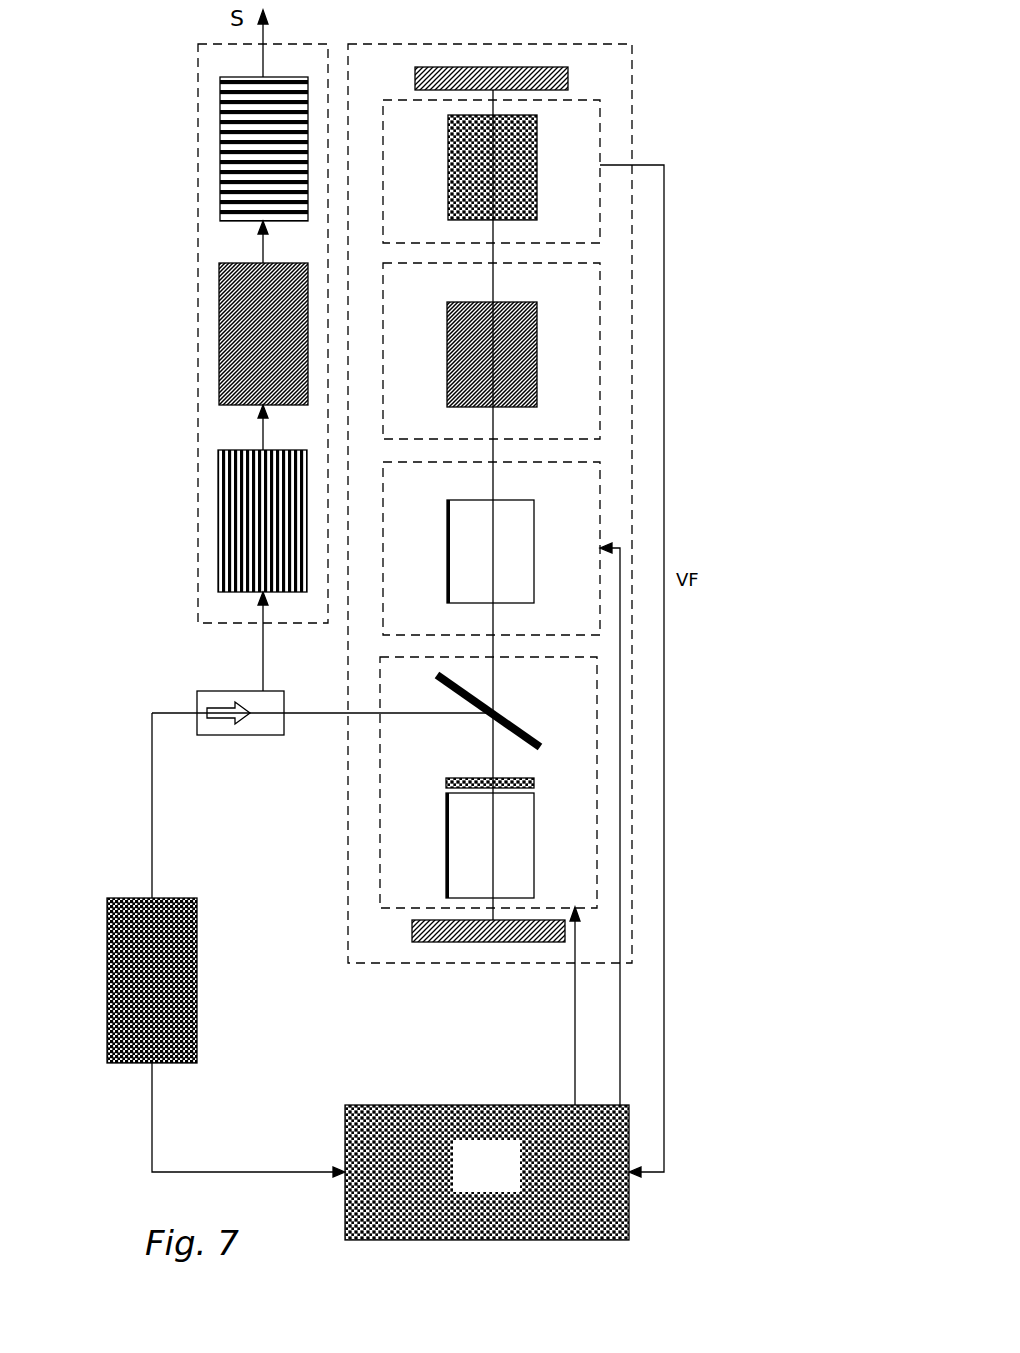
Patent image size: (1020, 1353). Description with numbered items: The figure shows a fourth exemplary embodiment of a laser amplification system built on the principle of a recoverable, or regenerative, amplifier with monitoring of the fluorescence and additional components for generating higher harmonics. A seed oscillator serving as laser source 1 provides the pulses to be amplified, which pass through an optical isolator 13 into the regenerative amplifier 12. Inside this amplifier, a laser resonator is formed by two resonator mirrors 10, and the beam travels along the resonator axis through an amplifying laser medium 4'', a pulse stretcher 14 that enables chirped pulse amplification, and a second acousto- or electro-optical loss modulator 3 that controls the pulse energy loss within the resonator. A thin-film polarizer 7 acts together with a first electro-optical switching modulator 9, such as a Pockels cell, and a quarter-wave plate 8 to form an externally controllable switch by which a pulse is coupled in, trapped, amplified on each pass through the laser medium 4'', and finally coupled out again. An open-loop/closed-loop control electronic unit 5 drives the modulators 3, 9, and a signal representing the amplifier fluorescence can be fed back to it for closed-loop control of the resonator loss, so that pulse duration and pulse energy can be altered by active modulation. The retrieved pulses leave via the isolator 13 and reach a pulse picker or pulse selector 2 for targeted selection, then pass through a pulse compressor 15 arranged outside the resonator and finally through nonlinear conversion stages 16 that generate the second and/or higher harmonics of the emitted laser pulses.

The laser source 1 is at (200, 980).
The pulse picker or pulse selector 2 is at (202, 521).
The acousto- or electro-optical loss modulator 3 is at (556, 548).
The amplifying laser medium 4'' is at (562, 166).
The open-loop/closed-loop control electronic unit 5 is at (487, 1172).
The polarizer 7 is at (583, 708).
The quarter-wave plate 8 is at (393, 808).
The electro-optical switching modulator 9 is at (395, 845).
The resonator mirror 10 is at (578, 493).
The regenerative amplifier 12 is at (545, 503).
The optical isolator 13 is at (261, 733).
The pulse stretcher 14 is at (563, 351).
The pulse compressor 15 is at (196, 334).
The nonlinear conversion stages 16 is at (196, 149).